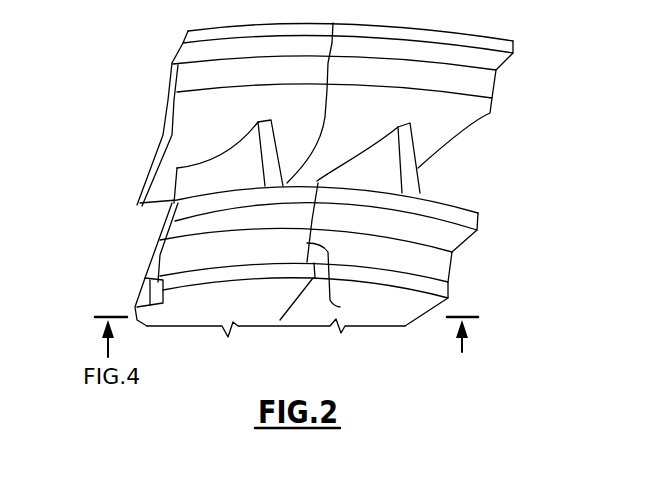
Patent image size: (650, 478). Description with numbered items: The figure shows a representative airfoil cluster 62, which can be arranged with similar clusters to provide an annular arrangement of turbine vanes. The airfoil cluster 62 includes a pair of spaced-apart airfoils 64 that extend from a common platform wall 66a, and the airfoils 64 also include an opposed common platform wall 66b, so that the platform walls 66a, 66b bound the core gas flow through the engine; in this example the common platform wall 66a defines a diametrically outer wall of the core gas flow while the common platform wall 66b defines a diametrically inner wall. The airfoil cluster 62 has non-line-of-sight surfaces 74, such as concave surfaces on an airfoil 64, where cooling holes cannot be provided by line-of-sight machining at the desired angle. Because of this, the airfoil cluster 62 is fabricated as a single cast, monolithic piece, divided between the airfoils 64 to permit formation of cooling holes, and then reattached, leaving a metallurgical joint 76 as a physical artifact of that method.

The airfoil cluster 62 is at (101, 240).
The airfoils 64 is at (207, 180).
The common platform wall 66a is at (453, 217).
The opposed common platform wall 66b is at (477, 111).
The non-line-of-sight surfaces 74 is at (180, 129).
The metallurgical joint 76 is at (338, 282).